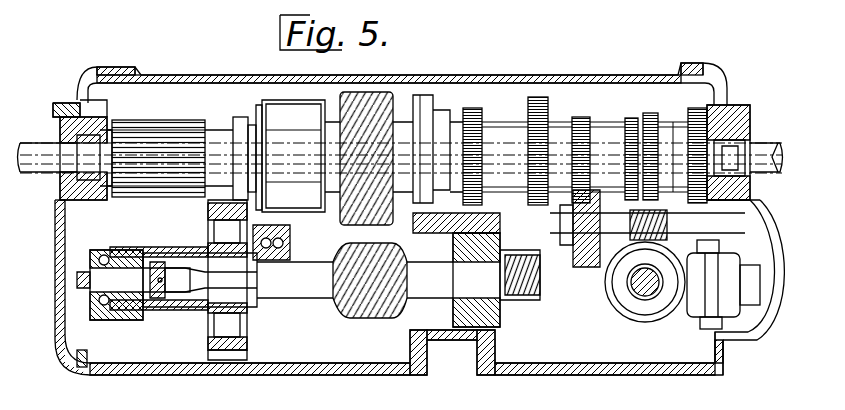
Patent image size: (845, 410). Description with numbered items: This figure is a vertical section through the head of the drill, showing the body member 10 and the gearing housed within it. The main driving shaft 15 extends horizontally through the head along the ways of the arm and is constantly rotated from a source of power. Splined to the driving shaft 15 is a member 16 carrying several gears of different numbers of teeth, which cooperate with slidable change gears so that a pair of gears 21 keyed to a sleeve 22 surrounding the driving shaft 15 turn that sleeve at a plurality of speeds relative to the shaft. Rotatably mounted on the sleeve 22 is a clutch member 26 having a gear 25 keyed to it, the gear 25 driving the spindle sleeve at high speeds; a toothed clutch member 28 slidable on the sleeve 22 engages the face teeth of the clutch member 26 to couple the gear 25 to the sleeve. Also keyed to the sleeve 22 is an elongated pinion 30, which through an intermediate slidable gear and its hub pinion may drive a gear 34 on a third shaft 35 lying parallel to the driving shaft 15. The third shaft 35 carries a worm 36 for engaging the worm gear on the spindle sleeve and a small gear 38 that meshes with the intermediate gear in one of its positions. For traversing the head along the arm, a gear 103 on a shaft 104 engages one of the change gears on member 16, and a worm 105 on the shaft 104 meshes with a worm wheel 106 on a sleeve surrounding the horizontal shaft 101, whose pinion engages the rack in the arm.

The body member 10 is at (537, 78).
The main driving shaft 15 is at (77, 148).
The splined gear member 16 is at (580, 120).
The pair of gears 21 is at (530, 100).
The sleeve 22 is at (453, 135).
The gear 25 is at (343, 215).
The clutch member 26 is at (300, 118).
The toothed clutch member 28 is at (240, 127).
The elongated pinion 30 is at (155, 137).
The gear 34 is at (212, 205).
The third shaft 35 is at (190, 286).
The worm 36 is at (345, 310).
The small gear 38 is at (127, 315).
The horizontal shaft 101 is at (640, 285).
The gear 103 is at (583, 268).
The shaft 104 is at (614, 232).
The worm 105 is at (613, 292).
The worm wheel 106 is at (654, 321).